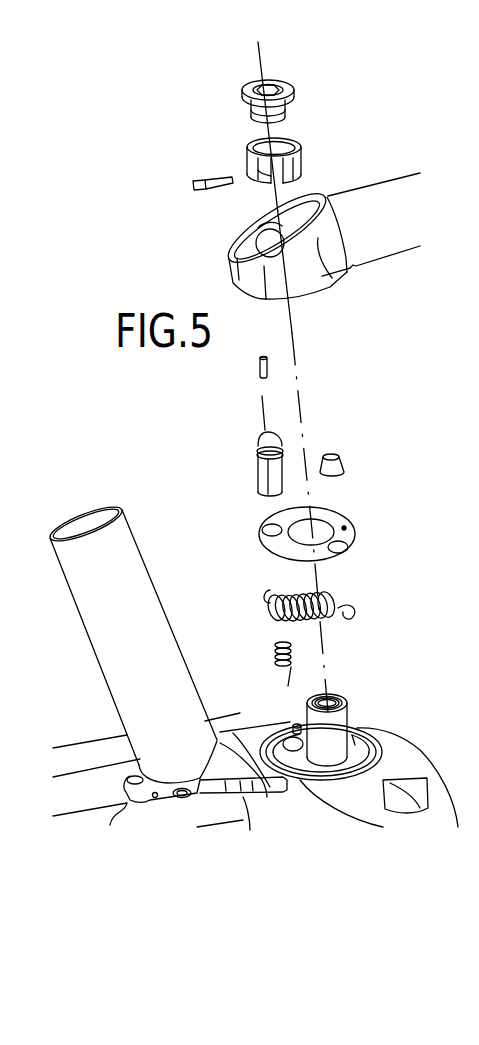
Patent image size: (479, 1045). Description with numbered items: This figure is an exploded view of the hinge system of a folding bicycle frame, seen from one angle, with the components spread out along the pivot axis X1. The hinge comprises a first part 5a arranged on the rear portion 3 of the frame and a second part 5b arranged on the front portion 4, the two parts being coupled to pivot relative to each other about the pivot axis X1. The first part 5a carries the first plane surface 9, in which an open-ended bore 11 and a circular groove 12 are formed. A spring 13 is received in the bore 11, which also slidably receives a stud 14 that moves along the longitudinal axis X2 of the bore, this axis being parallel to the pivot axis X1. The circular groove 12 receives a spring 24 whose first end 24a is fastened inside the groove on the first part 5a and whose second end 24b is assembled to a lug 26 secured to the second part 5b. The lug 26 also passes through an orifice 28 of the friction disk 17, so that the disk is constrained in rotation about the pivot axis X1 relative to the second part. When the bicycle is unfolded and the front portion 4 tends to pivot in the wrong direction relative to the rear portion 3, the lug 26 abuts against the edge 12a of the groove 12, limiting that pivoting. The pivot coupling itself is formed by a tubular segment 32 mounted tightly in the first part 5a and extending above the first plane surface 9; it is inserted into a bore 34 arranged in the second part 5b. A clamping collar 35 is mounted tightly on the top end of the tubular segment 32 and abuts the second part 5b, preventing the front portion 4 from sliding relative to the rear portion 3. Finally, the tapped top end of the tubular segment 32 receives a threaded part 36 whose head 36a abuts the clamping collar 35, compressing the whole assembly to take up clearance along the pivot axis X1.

The rear portion 3 is at (135, 556).
The front portion 4 is at (380, 186).
The first part 5a is at (299, 287).
The second part 5b is at (376, 774).
The first plane surface 9 is at (297, 727).
The open-ended bore 11 is at (287, 740).
The groove 12 is at (362, 737).
The edge of the circular groove 12a is at (276, 757).
The spring 13 is at (275, 652).
The stud 14 is at (259, 469).
The friction disk 17 is at (342, 510).
The spring 24 is at (334, 598).
The first end of the spring 24a is at (358, 616).
The second end of the spring 24b is at (270, 591).
The lug 26 is at (269, 363).
The orifice 28 is at (347, 528).
The tubular segment 32 is at (348, 712).
The bore 34 is at (268, 239).
The clamping collar 35 is at (249, 148).
The threaded part 36 is at (289, 113).
The head 36a is at (288, 89).
The pivot axis X1 is at (258, 50).
The longitudinal axis X2 is at (262, 409).